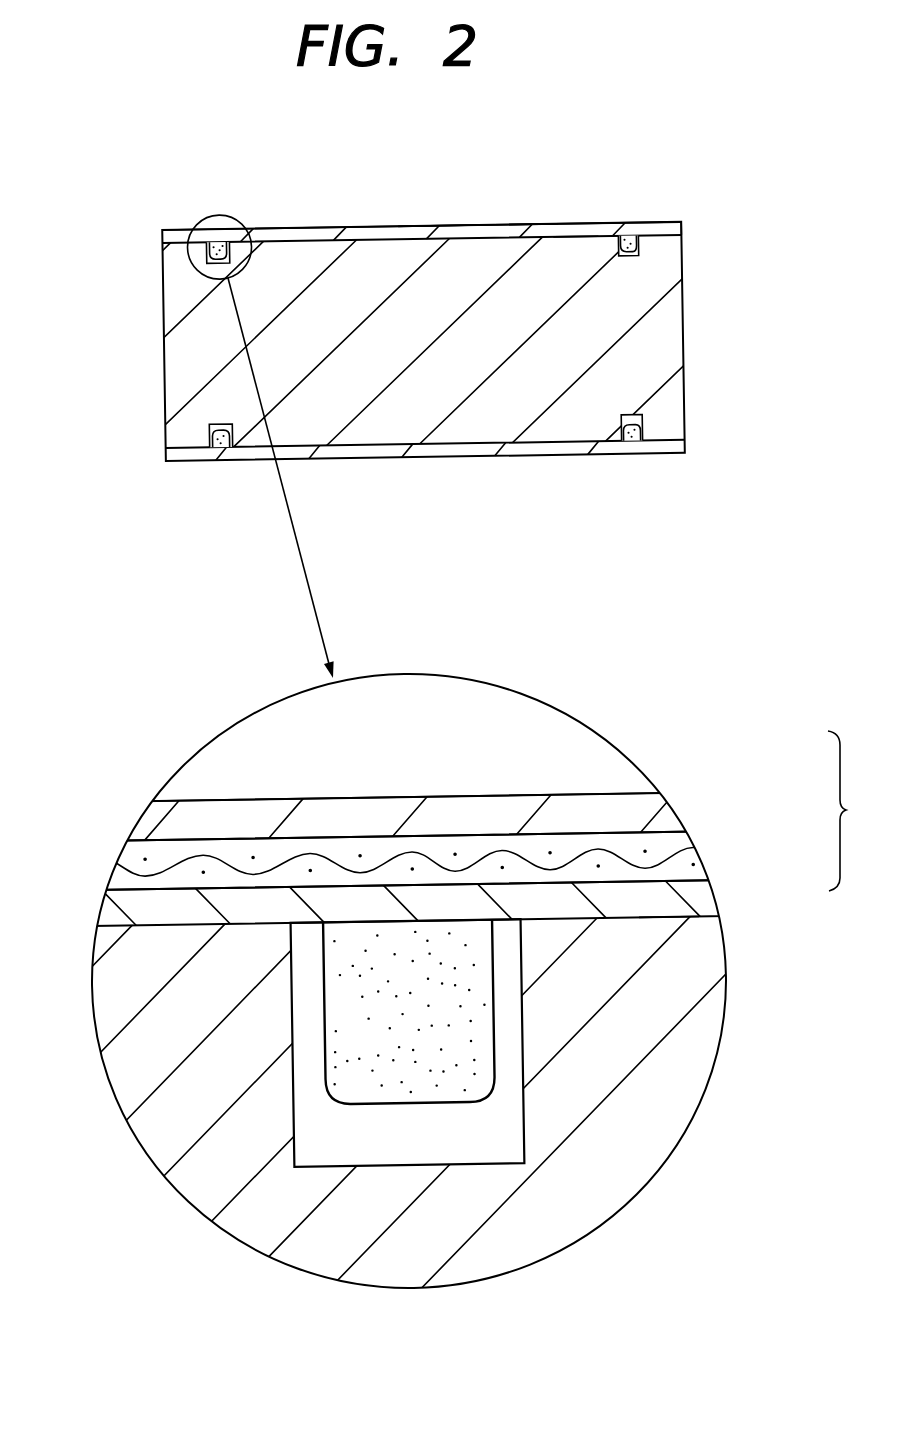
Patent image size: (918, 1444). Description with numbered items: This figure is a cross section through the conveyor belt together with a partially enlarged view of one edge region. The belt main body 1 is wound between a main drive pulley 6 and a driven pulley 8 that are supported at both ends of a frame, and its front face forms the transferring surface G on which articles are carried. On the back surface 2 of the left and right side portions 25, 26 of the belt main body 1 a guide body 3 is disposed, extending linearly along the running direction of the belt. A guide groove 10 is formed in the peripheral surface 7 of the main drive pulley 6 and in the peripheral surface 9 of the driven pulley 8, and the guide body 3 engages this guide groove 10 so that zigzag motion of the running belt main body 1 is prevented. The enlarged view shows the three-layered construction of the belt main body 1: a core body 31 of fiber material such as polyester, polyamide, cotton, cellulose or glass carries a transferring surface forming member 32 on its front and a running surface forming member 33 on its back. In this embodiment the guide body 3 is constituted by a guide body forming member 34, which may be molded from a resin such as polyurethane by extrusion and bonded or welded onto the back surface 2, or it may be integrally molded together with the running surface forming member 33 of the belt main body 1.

The belt main body 1 is at (400, 232).
The back surface 2 is at (563, 238).
The guide body 3 is at (632, 240).
The main drive pulley 6 is at (687, 1076).
The peripheral surface 7 is at (666, 917).
The driven pulley 8 is at (652, 333).
The peripheral surface 9 is at (487, 233).
The guide groove 10 is at (632, 254).
The left side portion 25 is at (183, 236).
The right side portion 26 is at (674, 224).
The core body 31 is at (675, 841).
The transferring surface forming member 32 is at (641, 808).
The running surface forming member 33 is at (700, 896).
The guide body forming member 34 is at (367, 1005).
The transferring surface G is at (325, 214).